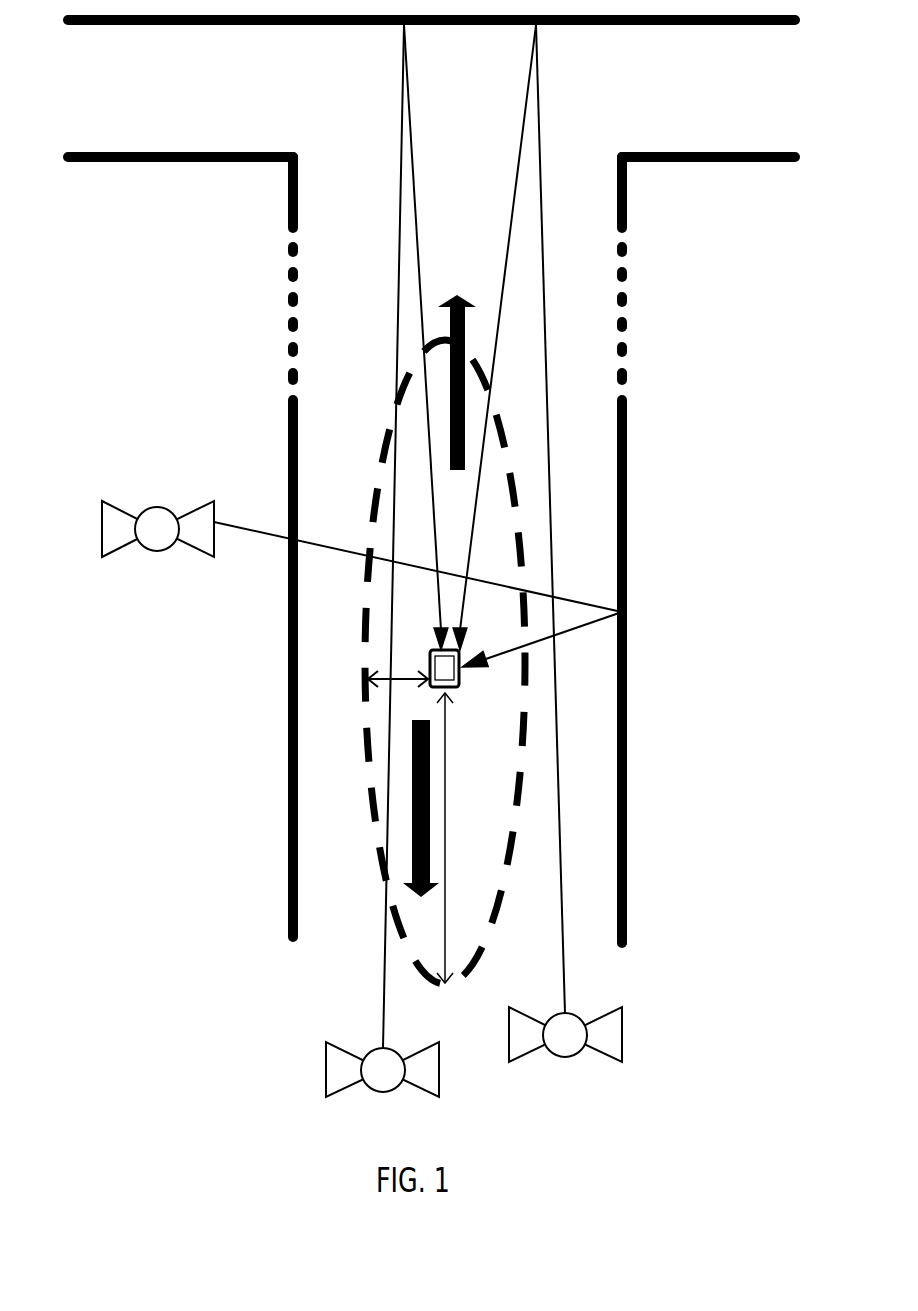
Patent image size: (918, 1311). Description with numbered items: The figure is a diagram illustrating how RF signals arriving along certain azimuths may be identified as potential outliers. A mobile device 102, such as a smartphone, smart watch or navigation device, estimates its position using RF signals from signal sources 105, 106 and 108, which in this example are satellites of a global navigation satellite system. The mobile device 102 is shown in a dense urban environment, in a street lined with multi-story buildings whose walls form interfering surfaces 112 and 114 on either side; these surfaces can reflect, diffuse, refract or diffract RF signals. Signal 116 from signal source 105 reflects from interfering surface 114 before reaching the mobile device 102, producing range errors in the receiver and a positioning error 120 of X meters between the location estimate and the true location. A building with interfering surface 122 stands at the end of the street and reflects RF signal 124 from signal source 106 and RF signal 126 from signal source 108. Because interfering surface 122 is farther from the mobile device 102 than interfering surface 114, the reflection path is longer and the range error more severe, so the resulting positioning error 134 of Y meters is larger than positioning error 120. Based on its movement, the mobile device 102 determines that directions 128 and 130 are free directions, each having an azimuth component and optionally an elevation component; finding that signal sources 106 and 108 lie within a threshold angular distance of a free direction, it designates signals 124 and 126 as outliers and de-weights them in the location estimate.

The mobile device 102 is at (430, 660).
The signal source 105 is at (157, 551).
The signal source 106 is at (325, 1067).
The signal source 108 is at (623, 1025).
The interfering surface 112 is at (290, 913).
The interfering surface 114 is at (625, 848).
The signal 116 is at (249, 528).
The positioning error 120 is at (415, 682).
The interfering surface 122 is at (168, 25).
The RF signal 124 is at (402, 175).
The RF signal 126 is at (538, 106).
The direction 128 is at (473, 295).
The direction 130 is at (413, 817).
The positioning error 134 is at (447, 765).